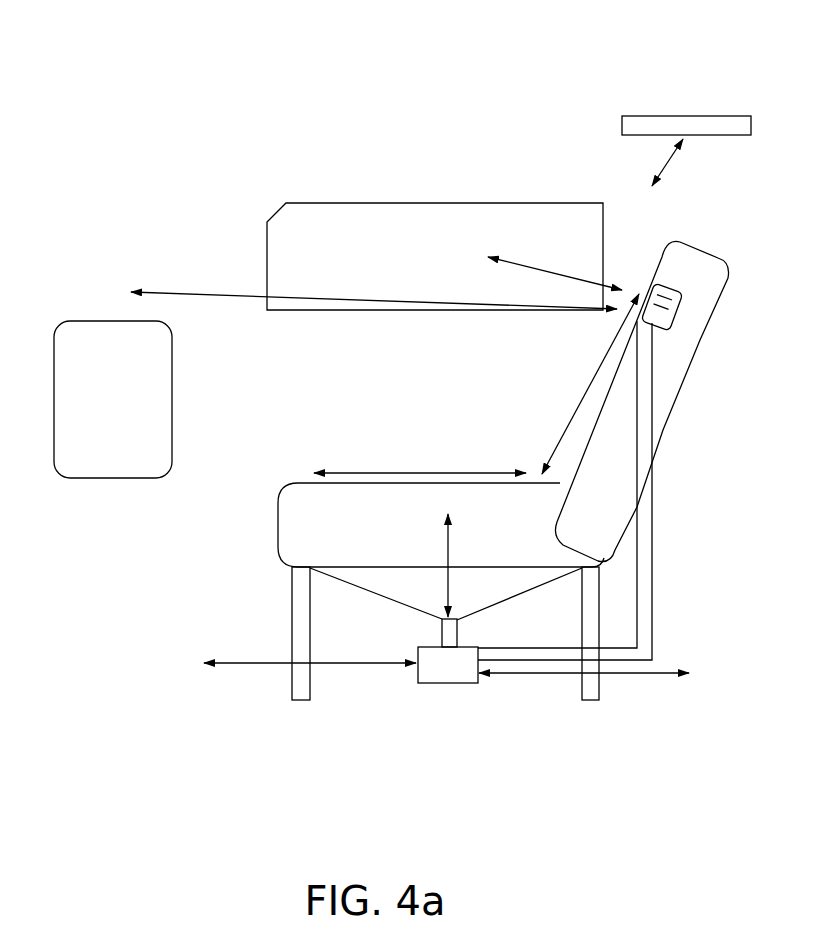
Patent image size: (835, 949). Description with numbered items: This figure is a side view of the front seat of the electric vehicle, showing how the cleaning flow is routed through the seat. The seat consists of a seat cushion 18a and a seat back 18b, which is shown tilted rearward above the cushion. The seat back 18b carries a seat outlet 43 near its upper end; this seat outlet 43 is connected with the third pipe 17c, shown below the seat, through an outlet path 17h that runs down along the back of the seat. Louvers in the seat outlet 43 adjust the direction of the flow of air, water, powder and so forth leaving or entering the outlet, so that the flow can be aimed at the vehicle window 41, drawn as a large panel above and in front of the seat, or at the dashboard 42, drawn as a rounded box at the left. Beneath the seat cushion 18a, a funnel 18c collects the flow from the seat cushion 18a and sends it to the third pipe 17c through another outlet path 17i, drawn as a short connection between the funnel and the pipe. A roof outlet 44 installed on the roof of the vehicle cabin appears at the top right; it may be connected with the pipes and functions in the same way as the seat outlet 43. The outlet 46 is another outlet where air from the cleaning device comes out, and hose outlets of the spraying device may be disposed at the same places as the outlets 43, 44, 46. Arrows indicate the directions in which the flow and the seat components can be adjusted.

The vehicle window 41 is at (307, 215).
The dashboard 42 is at (86, 466).
The seat outlet 43 is at (662, 285).
The roof outlet 44 is at (622, 126).
The outlet 46 is at (467, 622).
The third pipe 17c is at (448, 683).
The outlet path 17h is at (653, 580).
The outlet path 17i is at (441, 634).
The seat cushion 18a is at (293, 535).
The seat back 18b is at (688, 372).
The funnel 18c is at (372, 588).